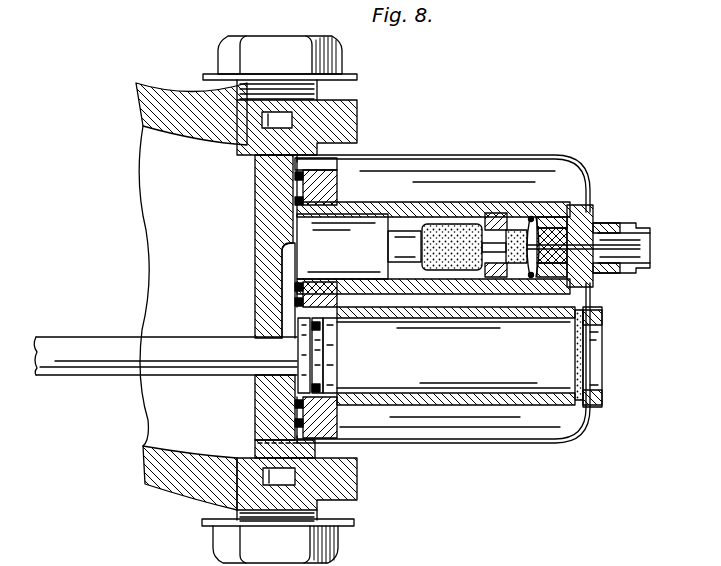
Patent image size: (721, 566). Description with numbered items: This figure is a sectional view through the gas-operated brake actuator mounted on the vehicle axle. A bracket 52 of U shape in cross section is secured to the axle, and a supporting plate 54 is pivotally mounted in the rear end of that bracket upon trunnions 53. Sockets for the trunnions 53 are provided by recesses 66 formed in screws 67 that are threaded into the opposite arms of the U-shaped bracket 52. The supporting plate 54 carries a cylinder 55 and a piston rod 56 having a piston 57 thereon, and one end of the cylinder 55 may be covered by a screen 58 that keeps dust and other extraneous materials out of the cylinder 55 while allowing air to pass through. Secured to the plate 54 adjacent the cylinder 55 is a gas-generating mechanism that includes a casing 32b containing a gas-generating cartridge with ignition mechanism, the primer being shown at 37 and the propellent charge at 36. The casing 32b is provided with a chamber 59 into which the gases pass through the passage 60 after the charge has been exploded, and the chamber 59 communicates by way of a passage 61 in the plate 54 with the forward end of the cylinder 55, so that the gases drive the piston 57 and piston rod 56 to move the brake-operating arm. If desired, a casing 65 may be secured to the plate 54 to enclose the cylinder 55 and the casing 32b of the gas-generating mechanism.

The bracket 52 is at (164, 96).
The trunnions 53 is at (292, 315).
The supporting plate 54 is at (263, 203).
The cylinder 55 is at (517, 400).
The piston rod 56 is at (97, 350).
The piston 57 is at (328, 352).
The screen 58 is at (578, 352).
The chamber 59 is at (340, 258).
The passage 60 is at (407, 247).
The passage 61 is at (287, 265).
The casing 65 is at (417, 443).
The recesses 66 is at (293, 121).
The screws 67 is at (298, 102).
The propellent charge 36 is at (437, 230).
The primer 37 is at (515, 230).
The casing 32b is at (473, 200).